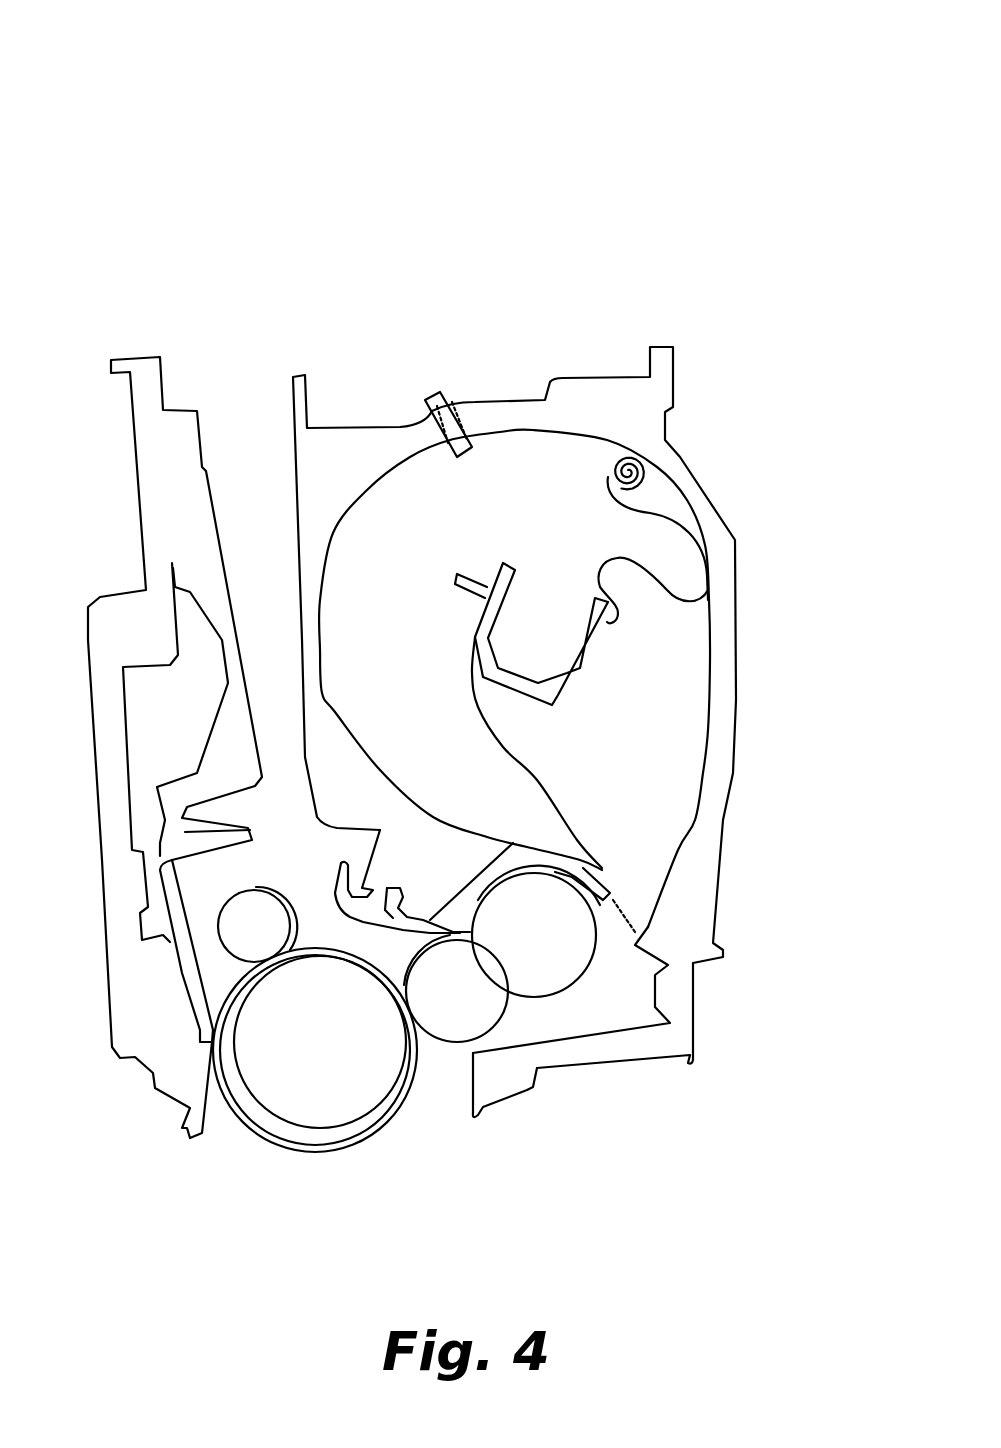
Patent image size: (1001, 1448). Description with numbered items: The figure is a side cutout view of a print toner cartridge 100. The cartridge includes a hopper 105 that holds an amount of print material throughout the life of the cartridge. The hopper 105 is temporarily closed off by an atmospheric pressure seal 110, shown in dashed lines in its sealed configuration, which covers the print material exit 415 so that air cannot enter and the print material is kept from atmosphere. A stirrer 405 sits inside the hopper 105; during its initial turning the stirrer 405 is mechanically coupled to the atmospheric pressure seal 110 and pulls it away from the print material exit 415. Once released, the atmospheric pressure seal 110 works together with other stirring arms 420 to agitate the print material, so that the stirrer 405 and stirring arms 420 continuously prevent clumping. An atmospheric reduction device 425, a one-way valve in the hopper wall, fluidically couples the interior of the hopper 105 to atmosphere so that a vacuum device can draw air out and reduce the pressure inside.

The print toner cartridge 100 is at (124, 66).
The hopper 105 is at (551, 445).
The atmospheric pressure seal 110 is at (668, 494).
The stirrer 405 is at (628, 624).
The print material exit 415 is at (619, 952).
The stirring arms 420 is at (580, 810).
The atmospheric reduction device 425 is at (443, 393).